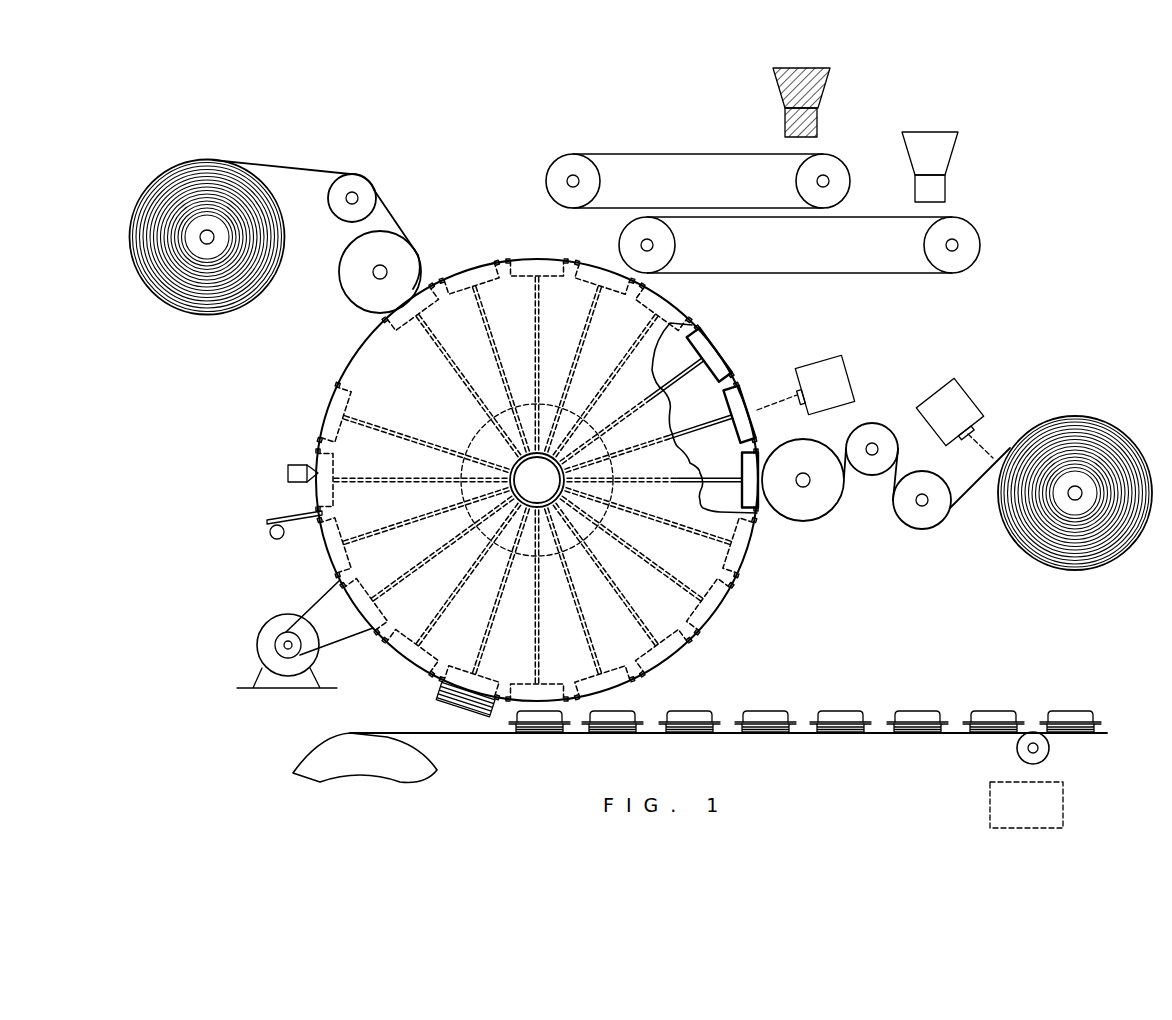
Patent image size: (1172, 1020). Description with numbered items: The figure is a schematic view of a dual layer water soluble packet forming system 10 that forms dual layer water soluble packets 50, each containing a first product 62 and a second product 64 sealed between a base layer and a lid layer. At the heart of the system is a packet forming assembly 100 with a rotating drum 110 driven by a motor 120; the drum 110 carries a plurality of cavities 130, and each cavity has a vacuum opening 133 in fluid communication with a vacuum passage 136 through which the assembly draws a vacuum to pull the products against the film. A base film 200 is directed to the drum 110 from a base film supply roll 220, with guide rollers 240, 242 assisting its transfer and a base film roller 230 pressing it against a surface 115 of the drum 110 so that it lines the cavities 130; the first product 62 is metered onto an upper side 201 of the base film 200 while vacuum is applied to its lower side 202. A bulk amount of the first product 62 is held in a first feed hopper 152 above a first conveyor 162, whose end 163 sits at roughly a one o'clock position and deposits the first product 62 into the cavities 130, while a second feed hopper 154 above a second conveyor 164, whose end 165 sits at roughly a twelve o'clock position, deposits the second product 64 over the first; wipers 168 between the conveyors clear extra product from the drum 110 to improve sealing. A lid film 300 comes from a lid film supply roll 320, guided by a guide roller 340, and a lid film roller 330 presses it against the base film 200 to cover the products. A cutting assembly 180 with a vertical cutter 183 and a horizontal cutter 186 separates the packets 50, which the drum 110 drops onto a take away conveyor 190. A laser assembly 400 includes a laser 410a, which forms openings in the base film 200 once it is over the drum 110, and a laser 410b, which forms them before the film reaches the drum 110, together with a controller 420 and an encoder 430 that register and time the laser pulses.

The dual layer water soluble packet forming system 10 is at (1005, 140).
The water soluble packets 50 is at (703, 695).
The first product 62 is at (920, 125).
The second product 64 is at (770, 82).
The packet forming assembly 100 is at (780, 342).
The drum 110 is at (612, 326).
The surface 115 is at (747, 562).
The motor 120 is at (238, 652).
The cavities 130 is at (522, 267).
The vacuum opening 133 is at (535, 278).
The vacuum passage 136 is at (533, 316).
The first feed hopper 152 is at (955, 153).
The second feed hopper 154 is at (830, 92).
The first conveyor 162 is at (893, 217).
The end of the first conveyor 163 is at (620, 240).
The second conveyor 164 is at (710, 153).
The end of the second conveyor 165 is at (549, 172).
The wipers 168 is at (488, 255).
The cutting assembly 180 is at (240, 465).
The vertical cutter 183 is at (287, 467).
The horizontal cutter 186 is at (288, 513).
The take away conveyor 190 is at (883, 733).
The base film 200 is at (958, 517).
The upper side of the base film 201 is at (970, 487).
The lower side of the base film 202 is at (980, 490).
The base film supply roll 220 is at (1087, 573).
The base film roller 230 is at (798, 508).
The guide roller 240 is at (870, 467).
The guide roller 242 is at (920, 522).
The lid film 300 is at (387, 197).
The lid film supply roll 320 is at (215, 305).
The lid film roller 330 is at (347, 280).
The guide roller 340 is at (335, 198).
The laser assembly 400 is at (1032, 650).
The laser 410a is at (837, 383).
The laser 410b is at (955, 408).
The controller 420 is at (992, 815).
The encoder 430 is at (1048, 750).